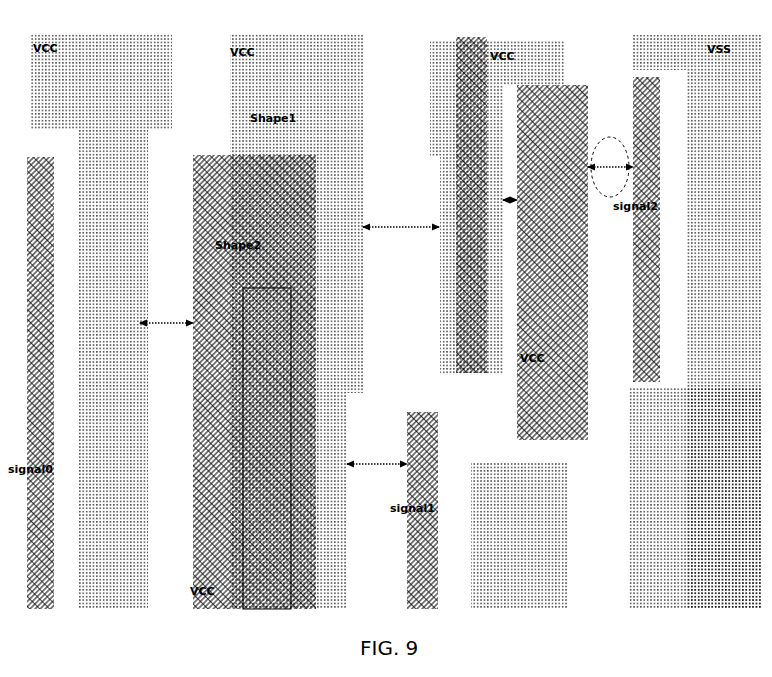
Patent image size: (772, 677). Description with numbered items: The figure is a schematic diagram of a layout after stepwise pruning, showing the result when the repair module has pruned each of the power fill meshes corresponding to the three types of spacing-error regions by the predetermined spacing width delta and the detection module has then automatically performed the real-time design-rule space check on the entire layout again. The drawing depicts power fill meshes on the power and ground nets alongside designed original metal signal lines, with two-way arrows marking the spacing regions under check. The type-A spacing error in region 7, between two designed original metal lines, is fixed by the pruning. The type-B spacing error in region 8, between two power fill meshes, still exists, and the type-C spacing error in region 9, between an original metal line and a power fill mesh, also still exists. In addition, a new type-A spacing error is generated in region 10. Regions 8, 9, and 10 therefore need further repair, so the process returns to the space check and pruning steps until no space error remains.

The region 7 is at (617, 164).
The region 8 is at (410, 220).
The region 9 is at (345, 465).
The region 10 is at (504, 212).